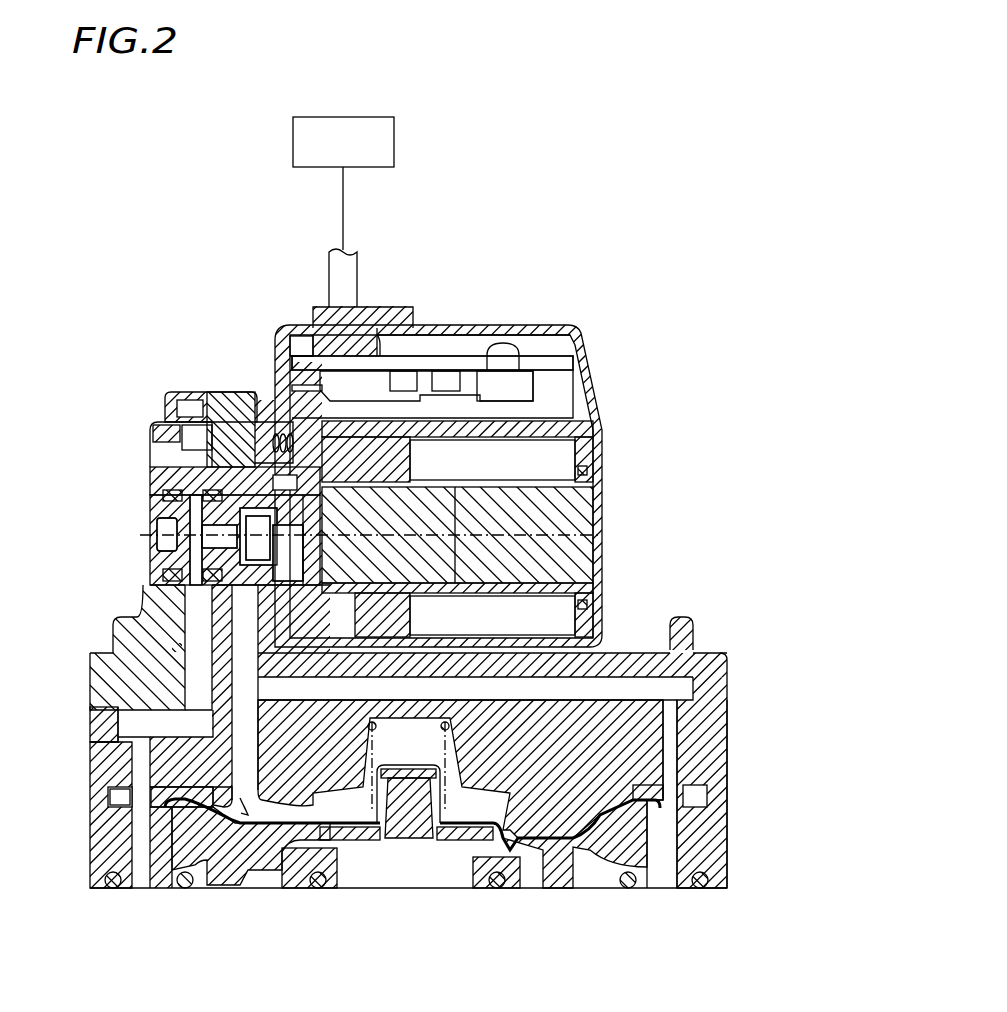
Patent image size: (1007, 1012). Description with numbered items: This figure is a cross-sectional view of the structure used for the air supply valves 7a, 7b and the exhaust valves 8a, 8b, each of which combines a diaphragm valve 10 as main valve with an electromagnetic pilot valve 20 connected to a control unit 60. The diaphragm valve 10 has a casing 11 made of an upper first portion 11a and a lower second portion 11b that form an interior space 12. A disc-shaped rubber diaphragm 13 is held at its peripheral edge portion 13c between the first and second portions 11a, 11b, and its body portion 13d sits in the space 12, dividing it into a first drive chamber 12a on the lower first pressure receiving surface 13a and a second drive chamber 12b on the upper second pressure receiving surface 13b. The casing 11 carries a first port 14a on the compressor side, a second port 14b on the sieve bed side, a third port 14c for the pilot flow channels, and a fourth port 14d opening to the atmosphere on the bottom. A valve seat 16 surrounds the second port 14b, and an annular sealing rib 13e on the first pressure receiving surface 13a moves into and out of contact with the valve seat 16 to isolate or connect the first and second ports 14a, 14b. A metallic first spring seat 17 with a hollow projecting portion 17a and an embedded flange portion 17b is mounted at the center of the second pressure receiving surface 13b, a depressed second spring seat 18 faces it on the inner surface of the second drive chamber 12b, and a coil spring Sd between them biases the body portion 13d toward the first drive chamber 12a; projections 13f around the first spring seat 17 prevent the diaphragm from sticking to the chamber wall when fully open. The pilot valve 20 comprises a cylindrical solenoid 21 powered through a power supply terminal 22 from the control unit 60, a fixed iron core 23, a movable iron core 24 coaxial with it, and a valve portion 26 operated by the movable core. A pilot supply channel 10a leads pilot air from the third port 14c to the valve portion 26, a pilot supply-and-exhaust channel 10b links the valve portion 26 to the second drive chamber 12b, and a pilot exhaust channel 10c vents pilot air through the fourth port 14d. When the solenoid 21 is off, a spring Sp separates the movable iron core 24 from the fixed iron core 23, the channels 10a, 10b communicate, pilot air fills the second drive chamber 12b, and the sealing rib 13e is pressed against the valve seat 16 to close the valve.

The control unit 60 is at (343, 183).
The power supply terminal 22 is at (358, 268).
The first air supply valve 7a is at (651, 206).
The second air supply valve 7b is at (651, 206).
The exhaust valve 8a is at (651, 206).
The exhaust valve 8b is at (597, 197).
The electromagnetic pilot valve 20 is at (432, 477).
The solenoid 21 is at (557, 462).
The fixed iron core 23 is at (557, 513).
The movable iron core 24 is at (430, 555).
The valve portion 26 is at (155, 527).
The spring Sp is at (300, 395).
The diaphragm valve 10 is at (425, 783).
The pilot supply channel 10a is at (688, 622).
The pilot supply-and-exhaust channel 10b is at (245, 690).
The pilot exhaust channel 10c is at (162, 727).
The casing 11 is at (732, 794).
The first portion 11a is at (707, 752).
The second portion 11b is at (710, 818).
The space 12 is at (460, 769).
The first drive chamber 12a is at (530, 810).
The second drive chamber 12b is at (579, 788).
The coil spring Sd is at (352, 765).
The second spring seat 18 is at (510, 750).
The diaphragm 13 is at (560, 830).
The first pressure receiving surface 13a is at (352, 862).
The second pressure receiving surface 13b is at (262, 860).
The peripheral edge portion 13c is at (695, 800).
The body portion 13d is at (148, 768).
The sealing rib 13e is at (497, 877).
The projections 13f is at (297, 833).
The first port 14a is at (218, 878).
The second port 14b is at (440, 873).
The third port 14c is at (660, 870).
The fourth port 14d is at (153, 867).
The valve seat 16 is at (313, 855).
The first spring seat 17 is at (412, 858).
The projecting portion 17a is at (393, 815).
The flange portion 17b is at (473, 840).